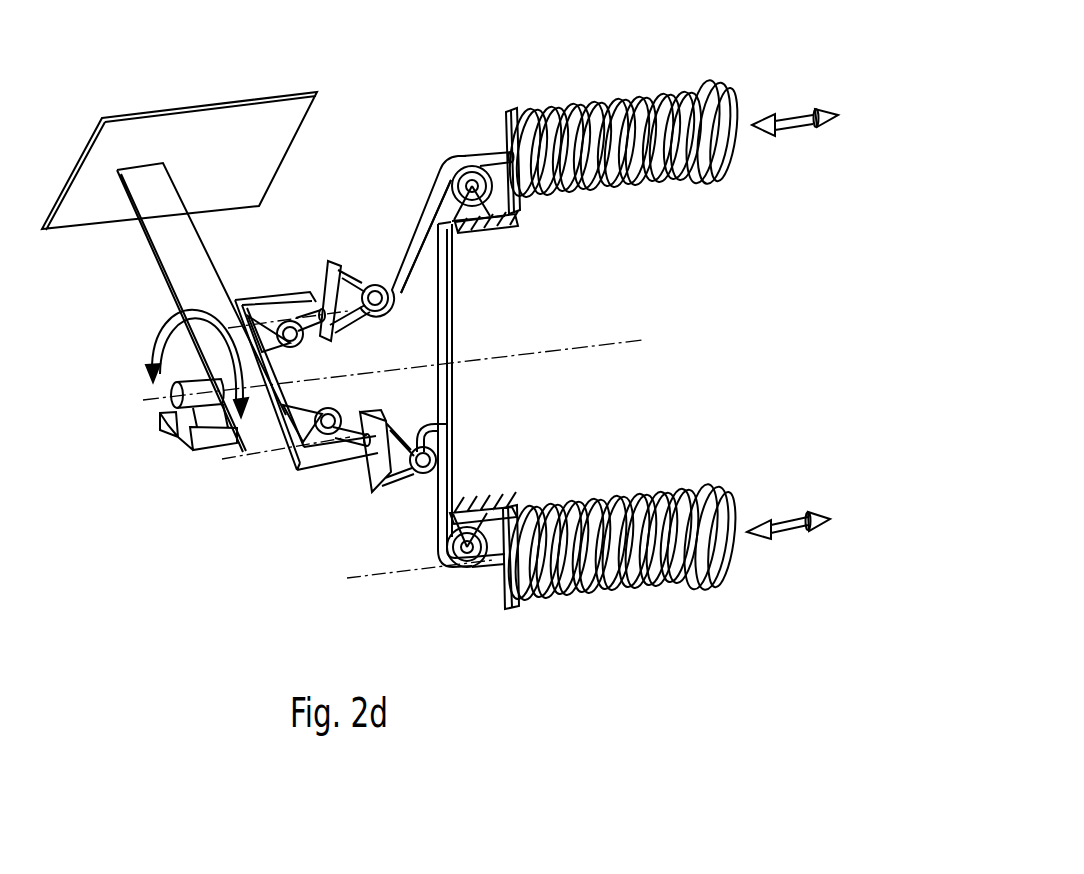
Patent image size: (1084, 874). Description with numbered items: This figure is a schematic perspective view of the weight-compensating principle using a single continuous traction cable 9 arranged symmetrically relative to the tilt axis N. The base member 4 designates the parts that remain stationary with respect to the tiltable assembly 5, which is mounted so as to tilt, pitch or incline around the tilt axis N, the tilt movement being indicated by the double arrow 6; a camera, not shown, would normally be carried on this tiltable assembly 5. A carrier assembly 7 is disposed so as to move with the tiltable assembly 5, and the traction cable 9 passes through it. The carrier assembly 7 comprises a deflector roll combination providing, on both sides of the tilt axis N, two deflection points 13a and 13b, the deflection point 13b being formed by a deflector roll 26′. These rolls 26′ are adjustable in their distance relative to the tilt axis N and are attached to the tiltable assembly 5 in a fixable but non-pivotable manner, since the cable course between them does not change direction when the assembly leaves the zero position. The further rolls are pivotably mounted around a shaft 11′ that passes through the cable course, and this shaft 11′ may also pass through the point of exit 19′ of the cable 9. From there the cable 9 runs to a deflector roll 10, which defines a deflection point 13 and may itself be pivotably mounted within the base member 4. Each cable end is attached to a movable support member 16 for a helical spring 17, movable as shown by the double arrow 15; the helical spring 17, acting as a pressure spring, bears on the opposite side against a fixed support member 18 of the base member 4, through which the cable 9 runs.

The base member 4 is at (170, 433).
The tiltable assembly 5 is at (160, 232).
The double arrow 6 is at (158, 352).
The carrier assembly 7 is at (316, 479).
The traction cable 9 is at (413, 237).
The deflector roll 10 is at (511, 153).
The shaft 11′ is at (195, 292).
The deflection point 13 is at (450, 158).
The deflection point 13a is at (396, 311).
The deflection point 13b is at (278, 313).
The double arrow 15 is at (797, 124).
The movable support member 16 is at (727, 188).
The helical spring 17 is at (612, 105).
The fixed support member 18 is at (520, 211).
The point of exit 19′ is at (440, 468).
The deflector roll 26′ is at (317, 400).
The tilt axis N is at (600, 348).